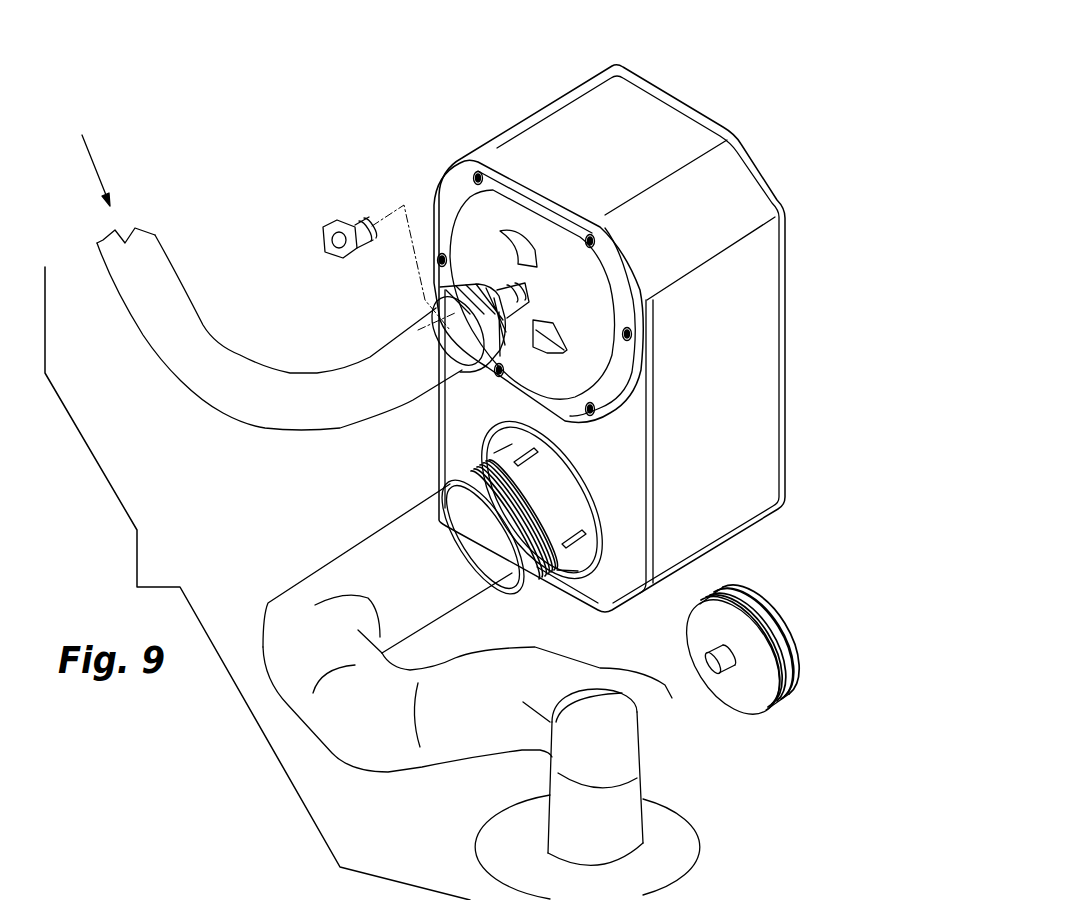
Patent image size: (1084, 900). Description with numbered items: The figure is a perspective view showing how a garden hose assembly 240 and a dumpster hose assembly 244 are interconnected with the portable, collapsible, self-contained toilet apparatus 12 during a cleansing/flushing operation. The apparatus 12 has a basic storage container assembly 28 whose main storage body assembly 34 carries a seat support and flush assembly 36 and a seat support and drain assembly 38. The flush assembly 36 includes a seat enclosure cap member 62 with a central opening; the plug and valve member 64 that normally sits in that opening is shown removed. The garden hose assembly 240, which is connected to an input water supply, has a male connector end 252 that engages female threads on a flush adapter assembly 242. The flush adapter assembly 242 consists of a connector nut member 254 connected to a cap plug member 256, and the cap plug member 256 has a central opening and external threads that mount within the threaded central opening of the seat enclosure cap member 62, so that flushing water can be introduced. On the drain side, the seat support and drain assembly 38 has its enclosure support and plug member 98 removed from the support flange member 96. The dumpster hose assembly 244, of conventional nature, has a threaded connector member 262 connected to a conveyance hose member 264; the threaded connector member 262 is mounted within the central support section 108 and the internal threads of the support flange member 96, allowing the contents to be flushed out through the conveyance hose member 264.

The portable, collapsible, self-contained toilet apparatus 12 is at (692, 47).
The basic storage container assembly 28 is at (696, 121).
The main storage body assembly 34 is at (728, 338).
The seat support and flush assembly 36 is at (592, 272).
The seat support and drain assembly 38 is at (566, 574).
The seat enclosure cap member 62 is at (500, 205).
The plug and valve member 64 is at (351, 212).
The support flange member 96 is at (588, 545).
The enclosure support and plug member 98 is at (784, 603).
The central support section 108 is at (542, 480).
The garden hose assembly 240 is at (255, 436).
The flush adapter assembly 242 is at (478, 382).
The dumpster hose assembly 244 is at (462, 765).
The male connector end 252 is at (375, 352).
The connector nut member 254 is at (443, 290).
The cap plug member 256 is at (498, 288).
The threaded connector member 262 is at (512, 530).
The conveyance hose member 264 is at (660, 690).